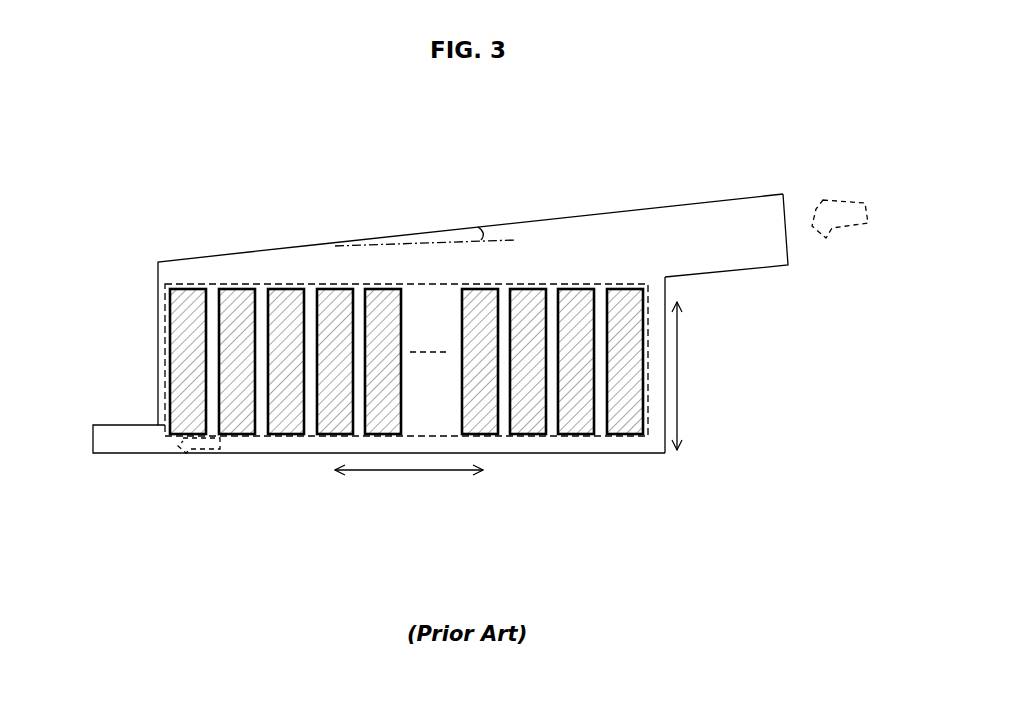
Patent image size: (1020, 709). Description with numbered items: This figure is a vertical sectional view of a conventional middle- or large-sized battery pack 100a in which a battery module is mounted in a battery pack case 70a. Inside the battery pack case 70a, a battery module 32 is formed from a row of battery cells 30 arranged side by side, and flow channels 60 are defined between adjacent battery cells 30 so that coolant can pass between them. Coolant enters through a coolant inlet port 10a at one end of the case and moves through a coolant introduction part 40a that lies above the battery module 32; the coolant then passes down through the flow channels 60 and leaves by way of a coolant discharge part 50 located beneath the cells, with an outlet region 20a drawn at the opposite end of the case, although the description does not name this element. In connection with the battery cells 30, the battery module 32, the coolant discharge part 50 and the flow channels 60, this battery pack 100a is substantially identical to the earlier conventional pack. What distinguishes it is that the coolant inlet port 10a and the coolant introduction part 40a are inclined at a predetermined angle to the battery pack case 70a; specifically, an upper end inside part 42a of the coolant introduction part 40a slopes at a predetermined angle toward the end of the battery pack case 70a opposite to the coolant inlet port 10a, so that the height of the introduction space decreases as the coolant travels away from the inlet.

The middle- or large-sized battery pack 100a is at (89, 121).
The coolant inlet port 10a is at (786, 247).
The air outlet 20a is at (93, 440).
The battery cells 30 is at (243, 425).
The battery module 32 is at (543, 440).
The coolant introduction part 40a is at (536, 260).
The upper end inside part 42a is at (313, 245).
The coolant discharge part 50 is at (315, 460).
The flow channels 60 is at (602, 412).
The battery pack case 70a is at (146, 288).